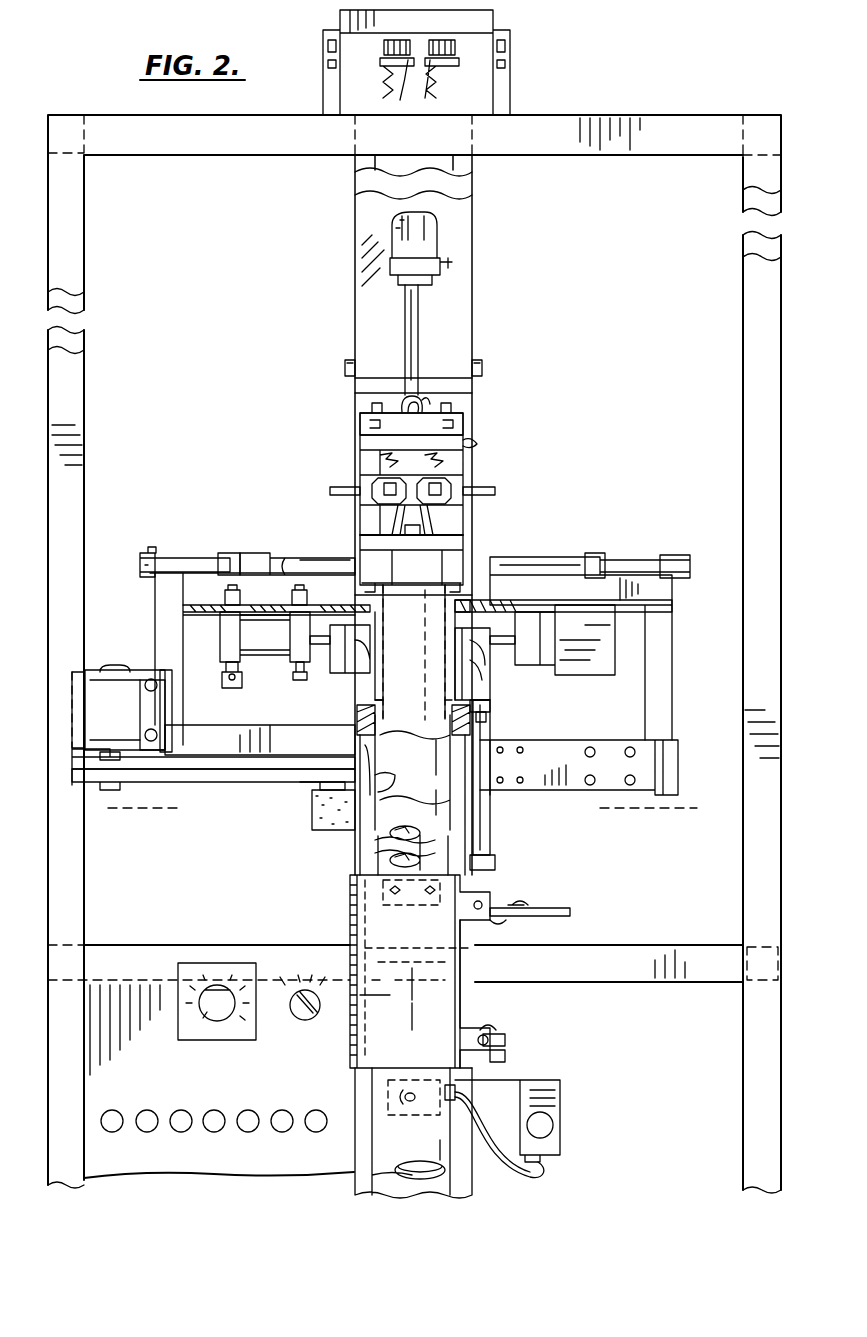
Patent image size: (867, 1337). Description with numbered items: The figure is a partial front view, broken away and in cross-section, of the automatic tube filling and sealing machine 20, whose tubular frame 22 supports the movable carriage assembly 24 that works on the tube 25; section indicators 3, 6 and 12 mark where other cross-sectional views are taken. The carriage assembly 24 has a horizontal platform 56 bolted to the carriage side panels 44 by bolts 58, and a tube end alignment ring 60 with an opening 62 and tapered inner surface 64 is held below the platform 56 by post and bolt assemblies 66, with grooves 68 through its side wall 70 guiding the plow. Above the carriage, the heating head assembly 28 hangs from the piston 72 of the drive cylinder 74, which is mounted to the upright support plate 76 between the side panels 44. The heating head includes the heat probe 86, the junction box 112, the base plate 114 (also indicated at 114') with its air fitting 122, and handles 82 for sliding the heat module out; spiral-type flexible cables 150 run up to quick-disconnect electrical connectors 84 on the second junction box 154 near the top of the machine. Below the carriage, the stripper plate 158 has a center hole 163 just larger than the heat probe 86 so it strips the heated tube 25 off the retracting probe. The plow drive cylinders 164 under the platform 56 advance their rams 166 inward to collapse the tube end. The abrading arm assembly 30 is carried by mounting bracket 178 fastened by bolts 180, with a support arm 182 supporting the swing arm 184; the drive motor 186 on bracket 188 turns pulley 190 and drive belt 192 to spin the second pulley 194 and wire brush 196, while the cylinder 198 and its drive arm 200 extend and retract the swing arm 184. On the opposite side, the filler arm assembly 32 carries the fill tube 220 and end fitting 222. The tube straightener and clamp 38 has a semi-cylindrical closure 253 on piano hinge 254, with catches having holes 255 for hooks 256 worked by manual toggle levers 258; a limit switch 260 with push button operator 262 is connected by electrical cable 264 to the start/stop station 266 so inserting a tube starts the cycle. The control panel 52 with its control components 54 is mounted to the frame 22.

The automatic tube filling and sealing machine 20 is at (697, 108).
The tubular frame 22 is at (568, 115).
The carriage assembly 24 is at (618, 552).
The tube 25 is at (376, 823).
The heating head assembly 28 is at (470, 545).
The abrading arm assembly 30 is at (222, 792).
The filler arm assembly 32 is at (536, 796).
The tube straightener and clamp 38 is at (345, 930).
The carriage side panels 44 is at (345, 368).
The control panel 52 is at (181, 1172).
The control components 54 is at (181, 1110).
The horizontal platform 56 is at (200, 612).
The bolts 58 is at (495, 580).
The tube end alignment ring 60 is at (357, 712).
The opening 62 is at (372, 790).
The tapered inner surface 64 is at (432, 738).
The post and bolt assemblies 66 is at (486, 716).
The grooves 68 is at (340, 678).
The side wall 70 is at (490, 703).
The piston 72 is at (418, 318).
The drive cylinder 74 is at (392, 232).
The support plate 76 is at (472, 280).
The handles 82 is at (340, 488).
The electrical connectors 84 is at (419, 78).
The heat probe 86 is at (411, 620).
The junction box 112 is at (362, 500).
The base plate 114 is at (445, 421).
The eye ring 114' is at (468, 405).
The air fitting 122 is at (478, 445).
The spiral-type flexible cables 150 is at (385, 118).
The second junction box 154 is at (345, 13).
The stripper plate 158 is at (450, 603).
The center hole 163 is at (382, 636).
The drive cylinders 164 is at (288, 644).
The ram 166 is at (296, 662).
The mounting bracket 178 is at (180, 588).
The bolts 180 is at (300, 596).
The support arm 182 is at (183, 657).
The swing arm 184 is at (272, 754).
The drive motor 186 is at (125, 670).
The bracket 188 is at (165, 705).
The pulley 190 is at (112, 779).
The drive belt 192 is at (170, 781).
The second pulley 194 is at (312, 791).
The wire brush 196 is at (320, 822).
The cylinder 198 is at (249, 558).
The drive arm 200 is at (196, 560).
The fill tube 220 is at (486, 831).
The end fitting 222 is at (490, 859).
The semi-cylindrical closure 253 is at (416, 1056).
The piano hinge 254 is at (522, 902).
The holes 255 is at (494, 920).
The hooks 256 is at (506, 1040).
The manual toggle levers 258 is at (560, 908).
The limit switch 260 is at (405, 1126).
The push button operator 262 is at (388, 1112).
The electrical cable 264 is at (542, 1176).
The start/stop station 266 is at (560, 1108).
The section line 3 is at (432, 232).
The section line 6 is at (120, 812).
The section line 12 is at (300, 875).